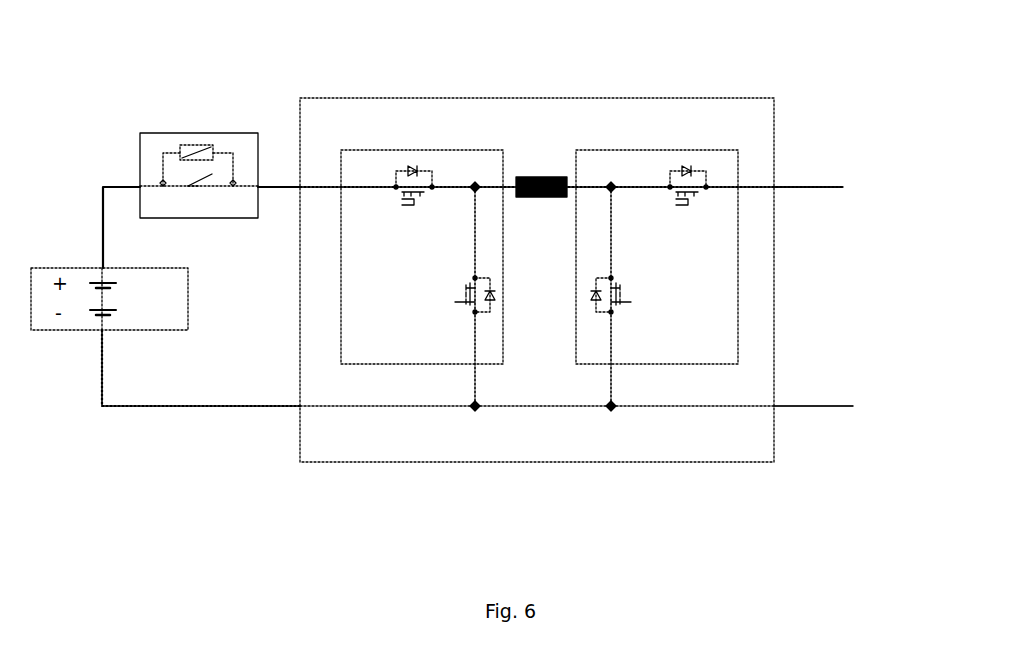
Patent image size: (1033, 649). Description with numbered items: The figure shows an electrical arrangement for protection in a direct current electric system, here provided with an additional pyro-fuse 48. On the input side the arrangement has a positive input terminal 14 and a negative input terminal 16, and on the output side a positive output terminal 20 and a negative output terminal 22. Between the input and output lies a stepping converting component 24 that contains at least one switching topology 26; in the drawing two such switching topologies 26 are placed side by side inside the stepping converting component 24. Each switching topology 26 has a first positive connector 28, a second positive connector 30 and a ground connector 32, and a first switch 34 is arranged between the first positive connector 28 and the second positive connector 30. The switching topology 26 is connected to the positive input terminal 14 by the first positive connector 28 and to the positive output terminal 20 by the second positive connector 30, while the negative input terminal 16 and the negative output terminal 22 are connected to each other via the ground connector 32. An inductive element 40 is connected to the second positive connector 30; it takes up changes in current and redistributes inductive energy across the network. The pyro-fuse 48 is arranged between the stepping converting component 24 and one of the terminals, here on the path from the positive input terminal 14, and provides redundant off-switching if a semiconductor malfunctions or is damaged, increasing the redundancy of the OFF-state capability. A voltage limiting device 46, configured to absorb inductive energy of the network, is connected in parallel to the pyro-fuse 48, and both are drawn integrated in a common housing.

The positive input terminal 14 is at (116, 187).
The negative input terminal 16 is at (117, 408).
The positive output terminal 20 is at (827, 187).
The negative output terminal 22 is at (835, 408).
The stepping converting component 24 is at (358, 462).
The switching topology 26 is at (430, 366).
The first positive connector 28 is at (320, 187).
The second positive connector 30 is at (447, 187).
The ground connector 32 is at (544, 408).
The first switch 34 is at (412, 165).
The inductive element 40 is at (546, 177).
The voltage limiting device 46 is at (185, 143).
The pyro-fuse 48 is at (183, 190).